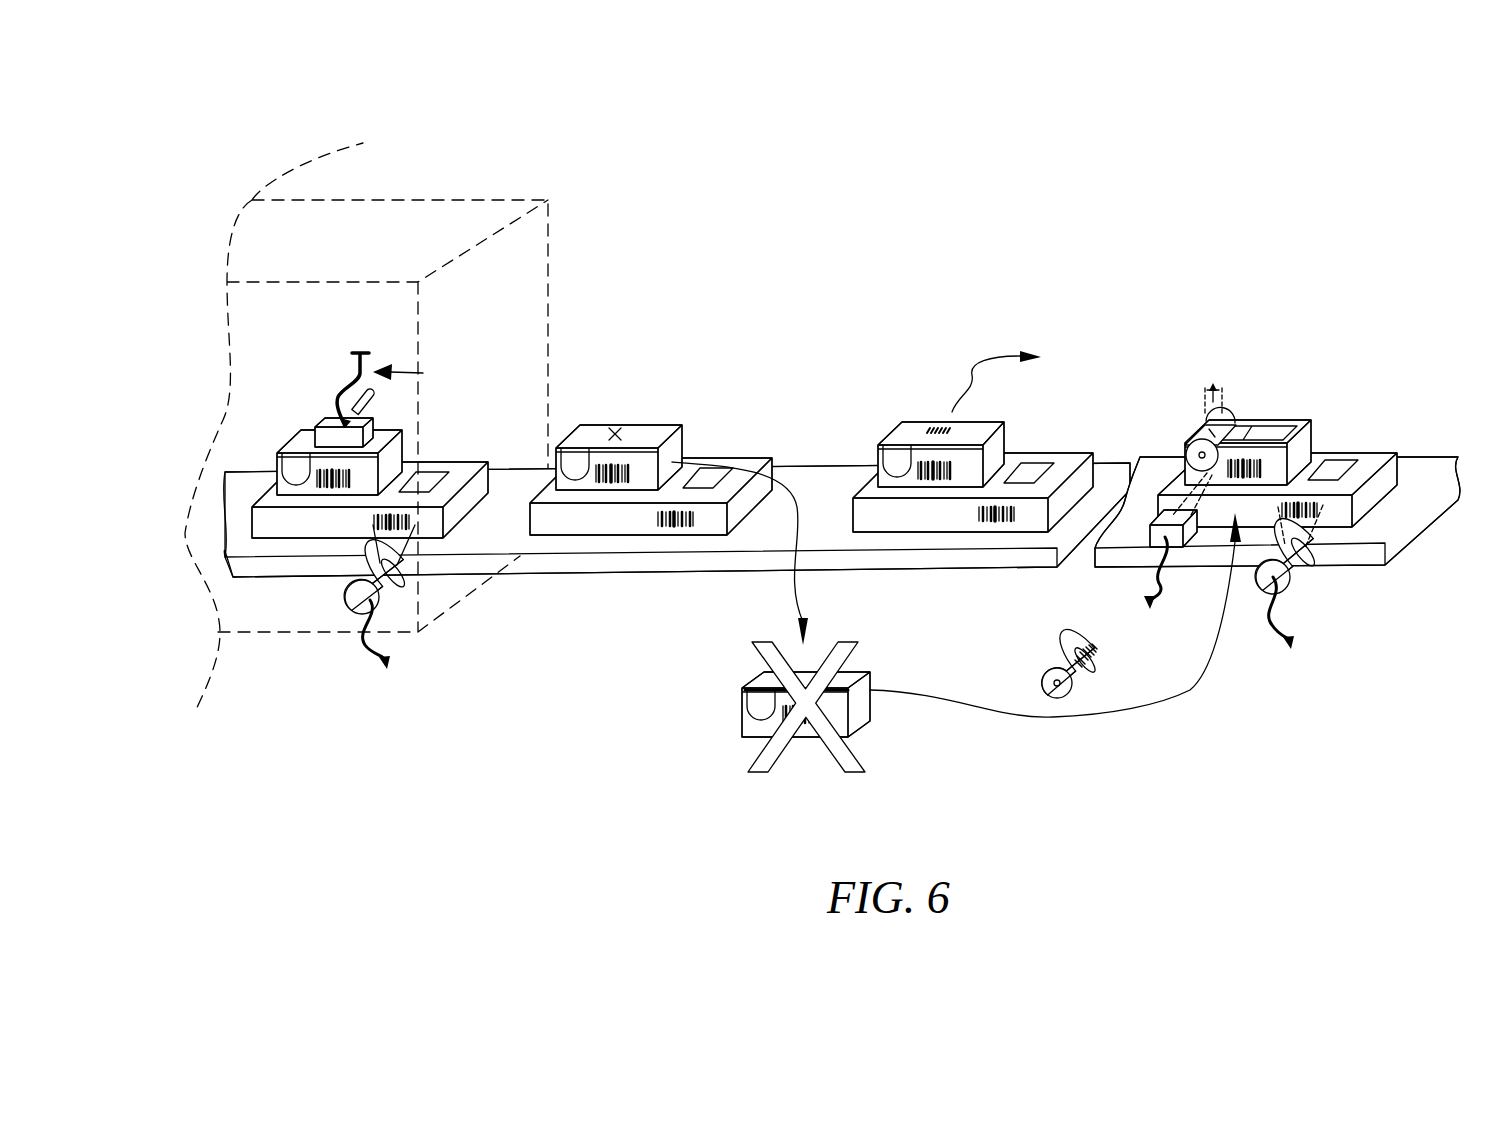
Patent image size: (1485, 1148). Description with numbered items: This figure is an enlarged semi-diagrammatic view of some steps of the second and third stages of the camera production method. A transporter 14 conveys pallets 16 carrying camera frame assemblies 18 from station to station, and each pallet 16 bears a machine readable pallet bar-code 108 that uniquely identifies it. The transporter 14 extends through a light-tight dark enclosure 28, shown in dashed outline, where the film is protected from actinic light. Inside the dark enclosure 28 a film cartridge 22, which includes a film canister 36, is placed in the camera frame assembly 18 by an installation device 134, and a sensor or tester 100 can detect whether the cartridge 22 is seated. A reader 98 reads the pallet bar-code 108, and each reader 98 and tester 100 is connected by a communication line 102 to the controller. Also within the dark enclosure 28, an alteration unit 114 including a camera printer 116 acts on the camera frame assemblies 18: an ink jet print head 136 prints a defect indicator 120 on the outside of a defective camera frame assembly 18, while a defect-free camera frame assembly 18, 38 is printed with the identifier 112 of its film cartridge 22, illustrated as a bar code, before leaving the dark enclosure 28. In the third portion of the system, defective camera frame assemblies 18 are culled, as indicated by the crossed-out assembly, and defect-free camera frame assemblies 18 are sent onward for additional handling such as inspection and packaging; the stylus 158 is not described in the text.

The transporter 14 is at (833, 468).
The pallet 16 is at (488, 478).
The camera frame assembly 18 is at (801, 574).
The film cartridge 22 is at (1065, 664).
The dark enclosure 28 is at (408, 198).
The film canister 36 is at (1040, 683).
The labeled container 38 is at (1012, 443).
The reader 98 is at (352, 581).
The tester 100 is at (1142, 533).
The communication line 102 is at (376, 648).
The pallet bar-code 108 is at (660, 532).
The cassette identifier 112 is at (925, 430).
The alteration unit 114 is at (458, 360).
The camera printer 116 is at (423, 373).
The defect indicator 120 is at (615, 436).
The installation device 134 is at (1222, 400).
The print head 136 is at (325, 427).
The stylus 158 is at (370, 412).